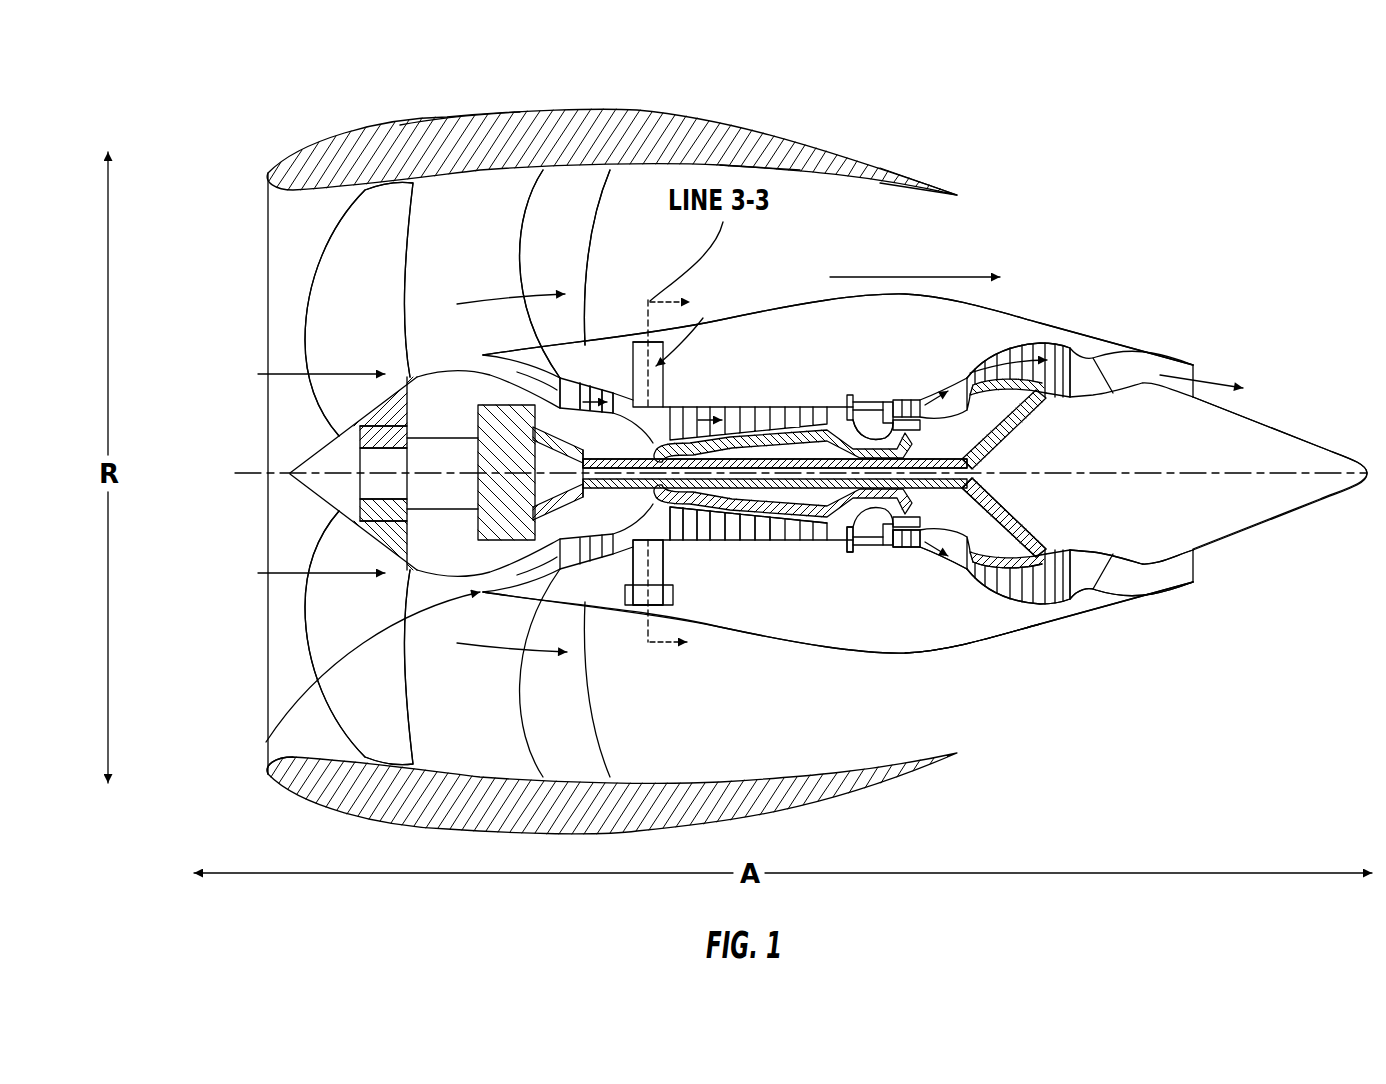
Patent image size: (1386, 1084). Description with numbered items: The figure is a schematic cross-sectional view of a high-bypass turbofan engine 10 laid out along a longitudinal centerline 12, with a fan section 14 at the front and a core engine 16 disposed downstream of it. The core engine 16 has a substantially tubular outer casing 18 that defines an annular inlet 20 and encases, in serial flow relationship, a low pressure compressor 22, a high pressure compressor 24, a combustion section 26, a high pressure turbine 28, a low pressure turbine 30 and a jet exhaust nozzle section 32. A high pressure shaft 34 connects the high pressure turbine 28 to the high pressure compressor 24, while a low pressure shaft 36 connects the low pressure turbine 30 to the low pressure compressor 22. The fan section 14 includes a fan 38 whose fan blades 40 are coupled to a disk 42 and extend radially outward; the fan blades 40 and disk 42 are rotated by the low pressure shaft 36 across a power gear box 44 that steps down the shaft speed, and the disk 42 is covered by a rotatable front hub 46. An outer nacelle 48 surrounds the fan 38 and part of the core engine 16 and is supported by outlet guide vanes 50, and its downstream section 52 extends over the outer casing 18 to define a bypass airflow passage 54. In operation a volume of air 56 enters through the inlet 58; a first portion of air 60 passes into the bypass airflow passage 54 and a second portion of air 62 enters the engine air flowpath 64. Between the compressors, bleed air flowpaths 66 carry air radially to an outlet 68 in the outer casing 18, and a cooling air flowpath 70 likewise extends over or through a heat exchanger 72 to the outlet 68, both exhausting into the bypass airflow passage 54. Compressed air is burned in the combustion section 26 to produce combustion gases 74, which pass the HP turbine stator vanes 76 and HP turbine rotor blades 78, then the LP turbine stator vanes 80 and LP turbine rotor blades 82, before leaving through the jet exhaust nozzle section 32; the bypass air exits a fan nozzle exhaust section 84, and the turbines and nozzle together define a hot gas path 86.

The turbofan engine 10 is at (1112, 213).
The longitudinal centerline 12 is at (1137, 472).
The fan section 14 is at (445, 92).
The core engine 16 is at (808, 302).
The outer casing 18 is at (827, 645).
The annular inlet 20 is at (343, 685).
The low pressure compressor 22 is at (590, 558).
The high pressure compressor 24 is at (707, 525).
The combustion section 26 is at (867, 537).
The high pressure turbine 28 is at (940, 537).
The low pressure turbine 30 is at (1052, 598).
The jet exhaust nozzle section 32 is at (1112, 582).
The high pressure shaft 34 is at (906, 430).
The low pressure shaft 36 is at (585, 462).
The fan 38 is at (282, 330).
The fan blades 40 is at (268, 753).
The disk 42 is at (363, 437).
The power gear box 44 is at (483, 424).
The rotatable front hub 46 is at (363, 510).
The outer nacelle 48 is at (496, 136).
The outlet guide vanes 50 is at (565, 218).
The downstream section 52 is at (893, 167).
The bypass airflow passage 54 is at (792, 302).
The volume of air 56 is at (343, 365).
The inlet 58 is at (698, 418).
The first portion of air 60 is at (475, 300).
The second portion of air 62 is at (560, 378).
The engine air flowpath 64 is at (662, 562).
The bleed air flowpaths 66 is at (687, 300).
The outlet 68 is at (638, 333).
The cooling air flowpath 70 is at (684, 526).
The heat exchanger 72 is at (687, 645).
The combustion gases 74 is at (1005, 345).
The HP turbine stator vanes 76 is at (885, 540).
The HP turbine rotor blades 78 is at (920, 513).
The LP turbine stator vanes 80 is at (983, 583).
The LP turbine rotor blades 82 is at (987, 590).
The fan nozzle exhaust section 84 is at (915, 698).
The hot gas path 86 is at (955, 374).